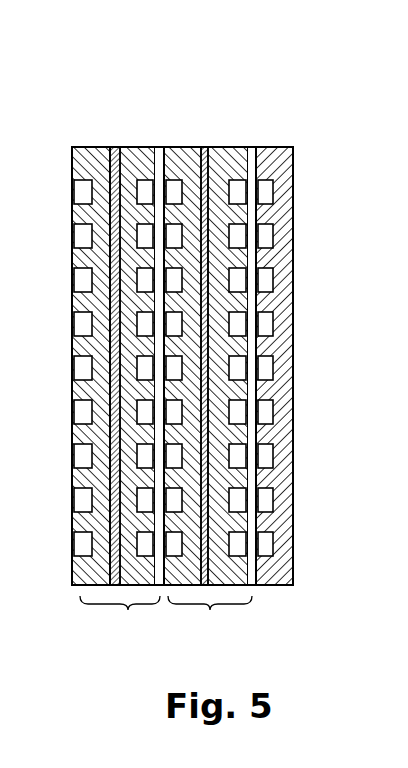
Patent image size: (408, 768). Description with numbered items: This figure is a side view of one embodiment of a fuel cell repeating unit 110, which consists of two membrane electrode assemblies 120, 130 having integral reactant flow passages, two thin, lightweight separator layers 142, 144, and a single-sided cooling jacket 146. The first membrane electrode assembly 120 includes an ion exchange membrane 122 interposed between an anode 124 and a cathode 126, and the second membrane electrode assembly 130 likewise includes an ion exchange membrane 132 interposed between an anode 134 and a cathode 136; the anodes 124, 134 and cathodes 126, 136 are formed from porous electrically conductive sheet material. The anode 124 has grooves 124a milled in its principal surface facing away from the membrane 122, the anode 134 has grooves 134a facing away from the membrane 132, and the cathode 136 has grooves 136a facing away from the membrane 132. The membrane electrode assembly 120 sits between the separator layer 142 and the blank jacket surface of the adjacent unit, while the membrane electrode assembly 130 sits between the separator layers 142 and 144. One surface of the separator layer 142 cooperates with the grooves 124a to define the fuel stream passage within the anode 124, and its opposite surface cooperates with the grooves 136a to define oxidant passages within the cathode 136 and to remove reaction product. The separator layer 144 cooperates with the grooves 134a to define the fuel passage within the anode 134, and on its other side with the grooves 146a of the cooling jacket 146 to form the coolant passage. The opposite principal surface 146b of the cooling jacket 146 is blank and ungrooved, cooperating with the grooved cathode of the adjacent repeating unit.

The fuel cell repeating unit 110 is at (303, 215).
The membrane electrode assembly 120 is at (120, 618).
The ion exchange membrane 122 is at (106, 147).
The anode 124 is at (129, 147).
The grooves 124a is at (147, 178).
The cathode 126 is at (87, 147).
The membrane electrode assembly 130 is at (210, 618).
The ion exchange membrane 132 is at (202, 147).
The anode 134 is at (218, 147).
The grooves 134a is at (231, 147).
The cathode 136 is at (172, 147).
The grooves 136a is at (177, 178).
The separator layer 142 is at (165, 586).
The separator layer 144 is at (252, 586).
The single-sided cooling jacket 146 is at (295, 378).
The grooves 146a is at (290, 550).
The blank principal surface 146b is at (300, 462).